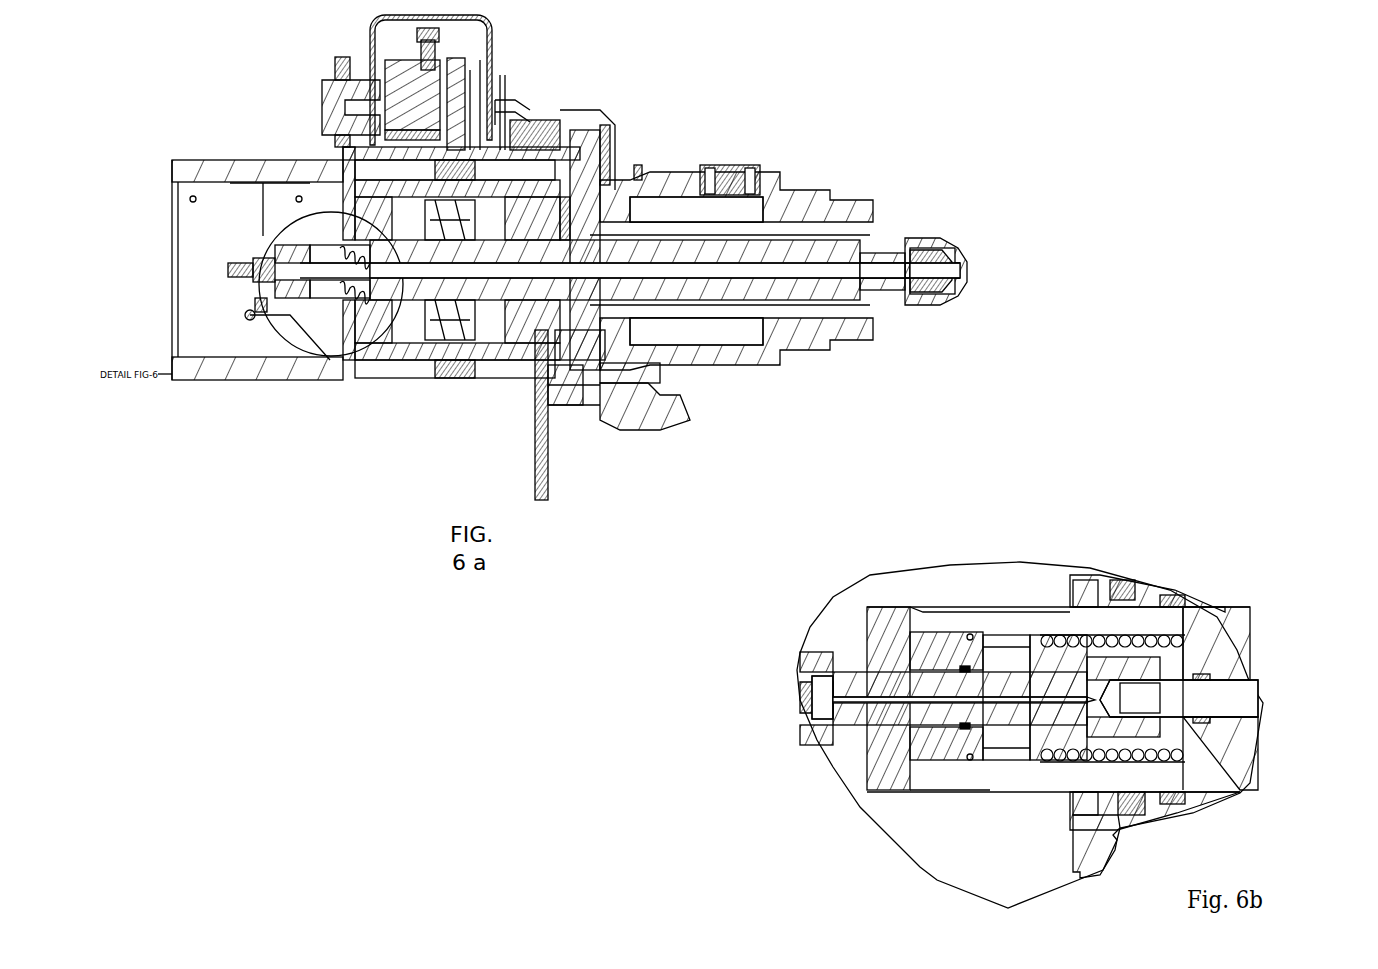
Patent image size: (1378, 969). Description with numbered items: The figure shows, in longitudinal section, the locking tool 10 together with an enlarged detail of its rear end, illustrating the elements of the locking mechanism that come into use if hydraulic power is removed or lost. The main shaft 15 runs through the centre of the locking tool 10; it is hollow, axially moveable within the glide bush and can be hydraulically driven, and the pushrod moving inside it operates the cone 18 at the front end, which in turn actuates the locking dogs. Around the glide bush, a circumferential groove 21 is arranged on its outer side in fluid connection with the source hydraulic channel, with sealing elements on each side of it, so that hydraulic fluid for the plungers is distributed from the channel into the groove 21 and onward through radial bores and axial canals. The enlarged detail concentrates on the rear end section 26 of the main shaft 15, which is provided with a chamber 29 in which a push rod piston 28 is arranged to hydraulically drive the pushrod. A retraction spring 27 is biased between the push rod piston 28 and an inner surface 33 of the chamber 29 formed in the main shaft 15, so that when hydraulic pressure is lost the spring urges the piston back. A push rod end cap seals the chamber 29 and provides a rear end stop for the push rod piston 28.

In FIG. 6A, the locking tool 10 is at (720, 380).
In FIG. 6A, the main shaft 15 is at (412, 292).
In FIG. 6B, the main shaft 15 is at (1203, 760).
In FIG. 6A, the cone 18 is at (938, 237).
In FIG. 6A, the circumferential groove 21 is at (613, 193).
In FIG. 6A, the rear end section 26 is at (332, 298).
In FIG. 6B, the rear end section 26 is at (990, 778).
In FIG. 6B, the retraction spring 27 is at (1083, 762).
In FIG. 6B, the push rod piston 28 is at (1053, 670).
In FIG. 6B, the chamber 29 is at (1007, 655).
In FIG. 6B, the inner surface 33 is at (1183, 665).